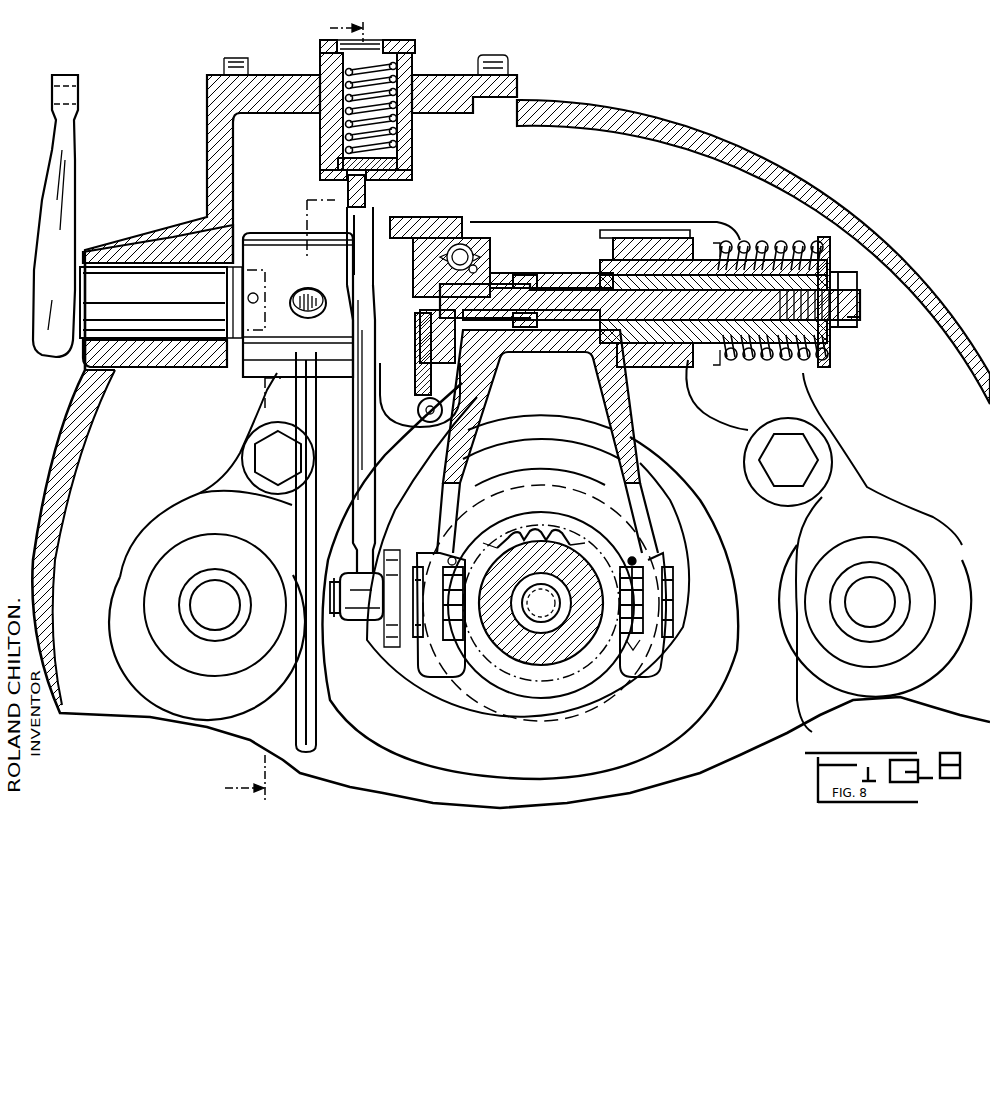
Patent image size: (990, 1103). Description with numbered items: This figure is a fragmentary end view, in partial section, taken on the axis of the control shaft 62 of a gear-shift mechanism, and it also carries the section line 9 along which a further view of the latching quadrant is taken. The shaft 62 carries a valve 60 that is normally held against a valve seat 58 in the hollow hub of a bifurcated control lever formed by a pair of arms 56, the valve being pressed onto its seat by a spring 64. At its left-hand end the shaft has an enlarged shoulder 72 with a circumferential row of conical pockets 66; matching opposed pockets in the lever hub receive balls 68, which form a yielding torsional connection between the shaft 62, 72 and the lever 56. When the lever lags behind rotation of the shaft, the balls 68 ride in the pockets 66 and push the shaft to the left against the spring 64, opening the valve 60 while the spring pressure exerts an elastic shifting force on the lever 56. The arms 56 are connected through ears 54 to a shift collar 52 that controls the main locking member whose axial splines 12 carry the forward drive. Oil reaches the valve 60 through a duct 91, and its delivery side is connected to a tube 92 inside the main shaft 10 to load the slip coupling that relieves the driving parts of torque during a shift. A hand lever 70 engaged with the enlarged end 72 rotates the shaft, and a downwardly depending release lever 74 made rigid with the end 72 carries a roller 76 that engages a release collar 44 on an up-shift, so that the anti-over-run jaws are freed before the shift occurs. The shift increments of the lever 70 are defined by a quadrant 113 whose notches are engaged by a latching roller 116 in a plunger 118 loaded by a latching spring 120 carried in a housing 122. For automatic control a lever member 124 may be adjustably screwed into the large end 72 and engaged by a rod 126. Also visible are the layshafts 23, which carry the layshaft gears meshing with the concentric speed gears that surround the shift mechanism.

The hand lever 70 is at (54, 170).
The section line 9- 9 is at (306, 414).
The housing 122 is at (466, 74).
The latching spring 120 is at (355, 150).
The plunger 118 is at (399, 135).
The latching roller 116 is at (398, 165).
The quadrant 113 is at (364, 207).
The shoulder (enlarged left-hand end of control shaft) 72 is at (300, 240).
The conical pockets 66 is at (432, 217).
The balls 68 is at (465, 246).
The valve 60 is at (530, 284).
The valve seat 58 is at (590, 262).
The control shaft 62 is at (534, 276).
The spring 64 is at (742, 250).
The lever member 124 is at (297, 302).
The duct 91 is at (427, 350).
The release lever 74 is at (375, 452).
The arms (bifurcated control lever) 56 is at (451, 478).
The ears 54 is at (436, 648).
The shift collar 52 is at (668, 551).
The axial splines 12 is at (560, 531).
The main shaft 10 is at (563, 652).
The tube 92 is at (540, 625).
The roller 76 is at (380, 648).
The layshafts 23 is at (207, 618).
The rod 126 is at (316, 697).
The release collar 44 is at (450, 750).